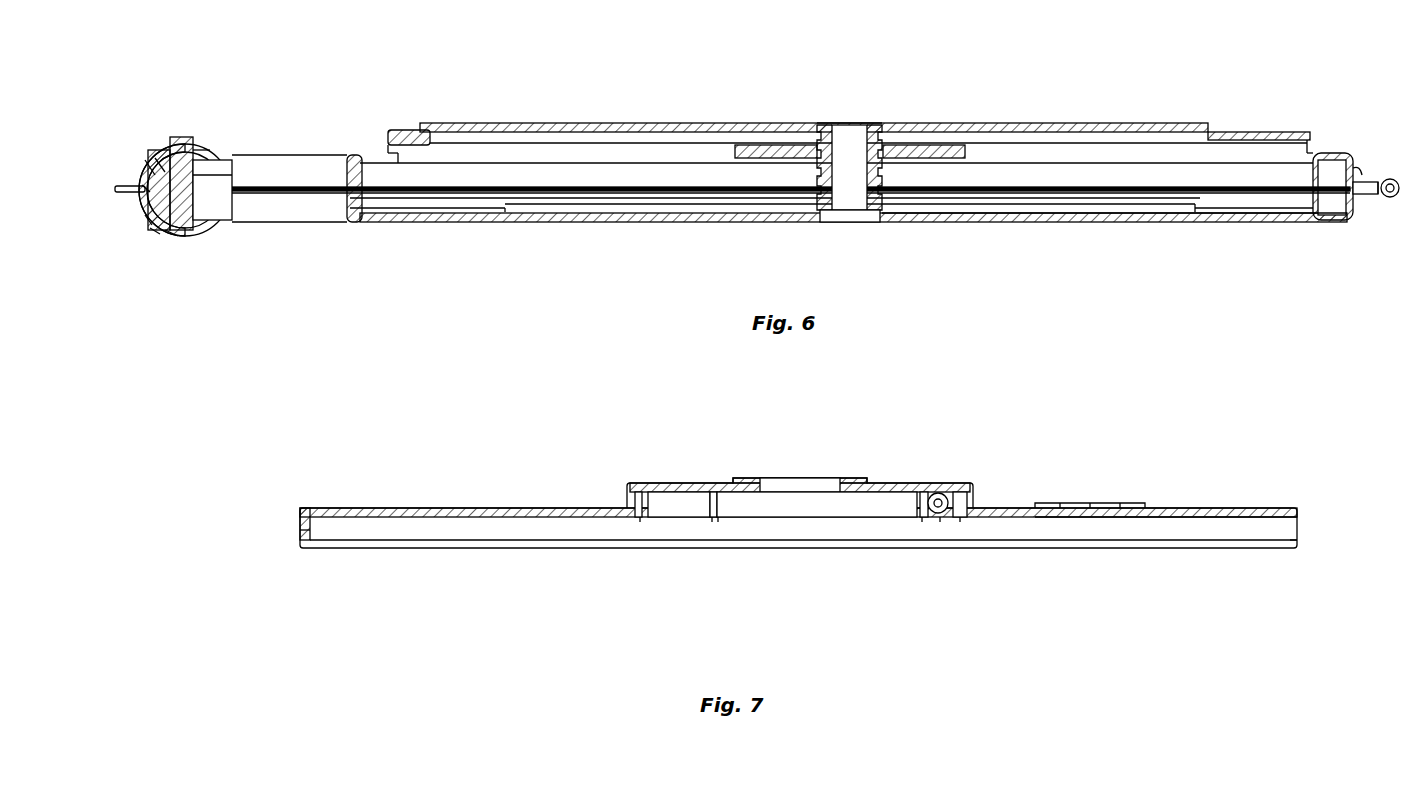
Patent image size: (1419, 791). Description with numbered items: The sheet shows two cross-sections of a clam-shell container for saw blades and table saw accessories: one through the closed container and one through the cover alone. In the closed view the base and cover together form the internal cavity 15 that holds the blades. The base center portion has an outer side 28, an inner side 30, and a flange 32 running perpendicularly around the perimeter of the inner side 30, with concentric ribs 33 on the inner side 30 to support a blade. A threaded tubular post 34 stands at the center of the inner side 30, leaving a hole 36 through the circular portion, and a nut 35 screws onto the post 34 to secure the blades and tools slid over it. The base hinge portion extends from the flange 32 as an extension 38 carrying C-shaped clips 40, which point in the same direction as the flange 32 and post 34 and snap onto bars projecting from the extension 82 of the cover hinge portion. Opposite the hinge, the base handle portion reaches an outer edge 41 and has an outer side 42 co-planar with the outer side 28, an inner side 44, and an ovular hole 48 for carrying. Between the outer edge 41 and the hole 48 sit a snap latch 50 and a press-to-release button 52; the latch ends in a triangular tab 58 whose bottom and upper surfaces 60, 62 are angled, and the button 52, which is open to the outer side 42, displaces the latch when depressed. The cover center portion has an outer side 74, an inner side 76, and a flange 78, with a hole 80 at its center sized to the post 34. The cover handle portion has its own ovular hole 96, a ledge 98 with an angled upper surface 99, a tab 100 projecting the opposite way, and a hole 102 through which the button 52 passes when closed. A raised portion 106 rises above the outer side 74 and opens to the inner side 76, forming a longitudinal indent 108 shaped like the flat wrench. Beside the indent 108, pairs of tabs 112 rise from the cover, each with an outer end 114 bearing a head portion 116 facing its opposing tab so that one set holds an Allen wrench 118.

In FIG. 6, the internal cavity 15 is at (1278, 175).
In FIG. 6, the outer side 28 is at (684, 224).
In FIG. 6, the inner side 30 is at (948, 216).
In FIG. 6, the flange 32 is at (358, 220).
In FIG. 6, the concentric ribs 33 is at (506, 212).
In FIG. 6, the tubular post 34 is at (877, 125).
In FIG. 6, the nut 35 is at (957, 145).
In FIG. 6, the hole 36 is at (848, 130).
In FIG. 6, the extension 38 is at (1370, 195).
In FIG. 6, the clips 40 is at (1392, 198).
In FIG. 6, the outer edge 41 is at (172, 232).
In FIG. 6, the outer side 42 is at (215, 160).
In FIG. 6, the inner side 44 is at (160, 148).
In FIG. 6, the ovular hole 48 is at (300, 214).
In FIG. 6, the snap latch 50 is at (190, 236).
In FIG. 6, the press-to-release button 52 is at (182, 136).
In FIG. 6, the triangular tab 58 is at (150, 166).
In FIG. 6, the bottom surface 60 is at (125, 188).
In FIG. 6, the upper surface 62 is at (160, 160).
In FIG. 7, the outer side 74 is at (1195, 507).
In FIG. 7, the inner side 76 is at (1242, 518).
In FIG. 6, the flange 78 is at (1356, 165).
In FIG. 7, the flange 78 is at (300, 530).
In FIG. 6, the hole 80 is at (824, 126).
In FIG. 7, the hole 80 is at (800, 479).
In FIG. 6, the extension 82 is at (1382, 180).
In FIG. 6, the ovular hole 96 is at (290, 160).
In FIG. 6, the ledge 98 is at (158, 232).
In FIG. 6, the angled upper surface 99 is at (150, 185).
In FIG. 6, the tab 100 is at (145, 225).
In FIG. 6, the hole 102 is at (197, 149).
In FIG. 6, the raised portion 106 is at (1240, 131).
In FIG. 7, the raised portion 106 is at (890, 484).
In FIG. 6, the longitudinal indent 108 is at (445, 126).
In FIG. 7, the tabs 112 is at (640, 494).
In FIG. 7, the outer end 114 is at (640, 520).
In FIG. 7, the head portion 116 is at (712, 520).
In FIG. 7, the Allen wrench 118 is at (940, 495).